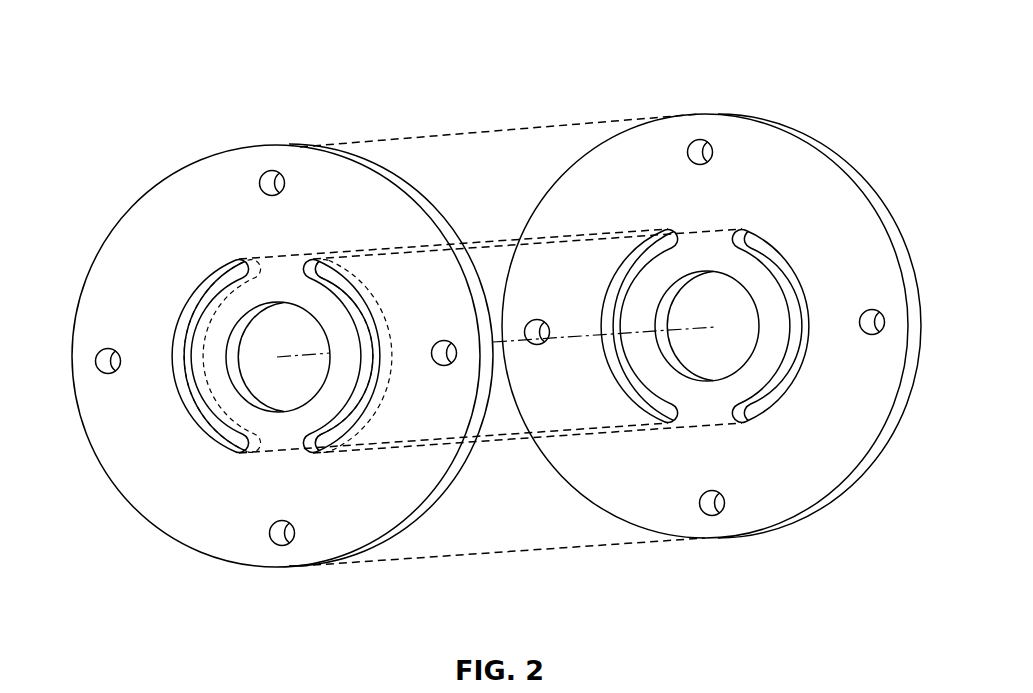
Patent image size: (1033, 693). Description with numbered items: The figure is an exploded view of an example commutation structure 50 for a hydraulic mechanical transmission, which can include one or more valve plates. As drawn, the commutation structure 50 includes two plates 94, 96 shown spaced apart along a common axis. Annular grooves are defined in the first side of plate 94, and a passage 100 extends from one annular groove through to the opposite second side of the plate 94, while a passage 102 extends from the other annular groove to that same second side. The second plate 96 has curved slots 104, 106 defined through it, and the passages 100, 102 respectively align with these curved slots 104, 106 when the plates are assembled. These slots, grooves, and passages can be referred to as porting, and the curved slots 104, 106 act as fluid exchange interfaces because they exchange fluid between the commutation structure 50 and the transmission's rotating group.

The commutation structure 50 is at (136, 50).
The plate 94 is at (725, 567).
The second plate 96 is at (287, 589).
The passage 100 is at (638, 235).
The passage 102 is at (773, 400).
The curved slot 104 is at (203, 288).
The curved slot 106 is at (353, 442).